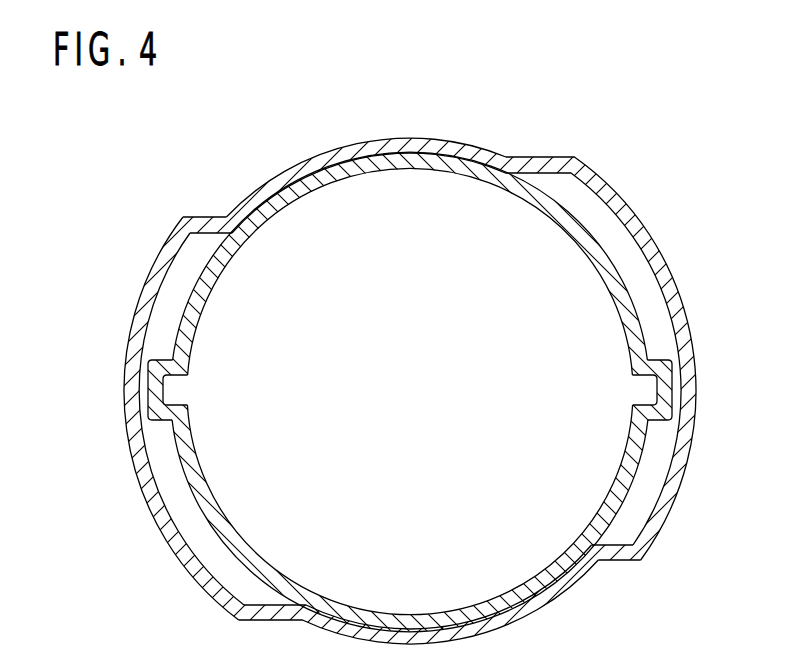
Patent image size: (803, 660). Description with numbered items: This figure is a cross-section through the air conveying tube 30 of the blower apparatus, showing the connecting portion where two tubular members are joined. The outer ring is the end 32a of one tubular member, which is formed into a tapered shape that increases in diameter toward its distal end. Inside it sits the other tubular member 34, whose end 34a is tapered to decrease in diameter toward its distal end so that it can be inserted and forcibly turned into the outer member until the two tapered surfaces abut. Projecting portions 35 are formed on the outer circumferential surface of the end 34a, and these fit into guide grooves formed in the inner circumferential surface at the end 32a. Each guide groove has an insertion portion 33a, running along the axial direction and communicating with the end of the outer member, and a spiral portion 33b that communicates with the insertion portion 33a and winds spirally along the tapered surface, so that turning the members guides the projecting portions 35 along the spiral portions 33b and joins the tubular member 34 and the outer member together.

The air conveying tube 30 is at (148, 142).
The end of tubular member 32 32a is at (310, 157).
The insertion portion 33a is at (182, 272).
The spiral portion 33b is at (155, 343).
The tubular member 34 is at (401, 330).
The end of tubular member 34 34a is at (255, 230).
The projecting portion 35 is at (150, 386).